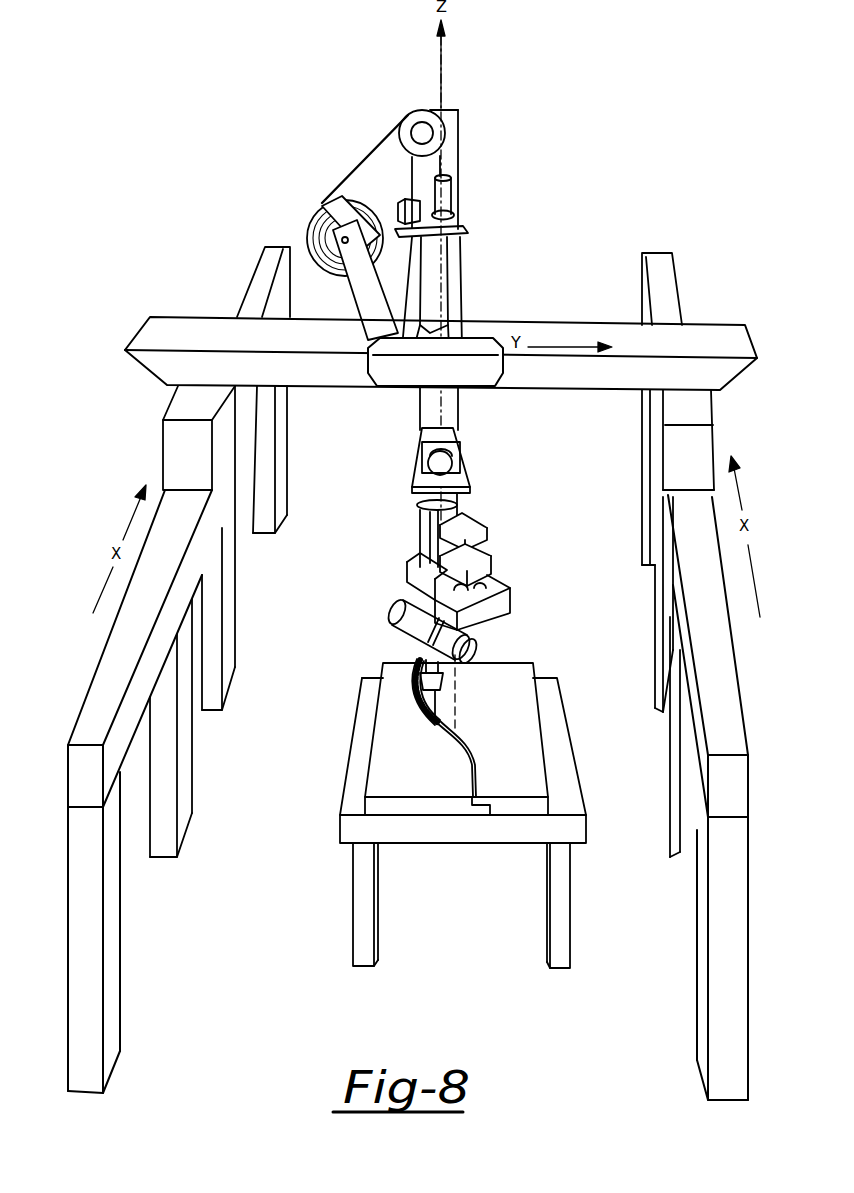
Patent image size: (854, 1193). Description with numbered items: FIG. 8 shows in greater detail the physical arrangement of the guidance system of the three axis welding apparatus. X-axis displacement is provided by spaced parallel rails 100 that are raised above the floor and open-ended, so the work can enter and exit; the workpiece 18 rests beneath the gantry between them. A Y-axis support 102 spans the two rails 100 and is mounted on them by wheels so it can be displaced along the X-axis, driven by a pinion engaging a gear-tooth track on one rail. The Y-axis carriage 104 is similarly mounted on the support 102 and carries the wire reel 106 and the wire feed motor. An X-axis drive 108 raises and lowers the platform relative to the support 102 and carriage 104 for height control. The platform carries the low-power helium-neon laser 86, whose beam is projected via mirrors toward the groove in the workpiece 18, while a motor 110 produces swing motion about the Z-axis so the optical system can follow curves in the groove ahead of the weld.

The workpiece 18 is at (525, 772).
The helium-neon laser 86 is at (397, 625).
The rails 100 is at (100, 668).
The Y-axis support 102 is at (713, 335).
The Y-axis carriage 104 is at (487, 393).
The wire reel 106 is at (312, 216).
The X-axis drive 108 is at (420, 503).
The motor 110 is at (468, 528).